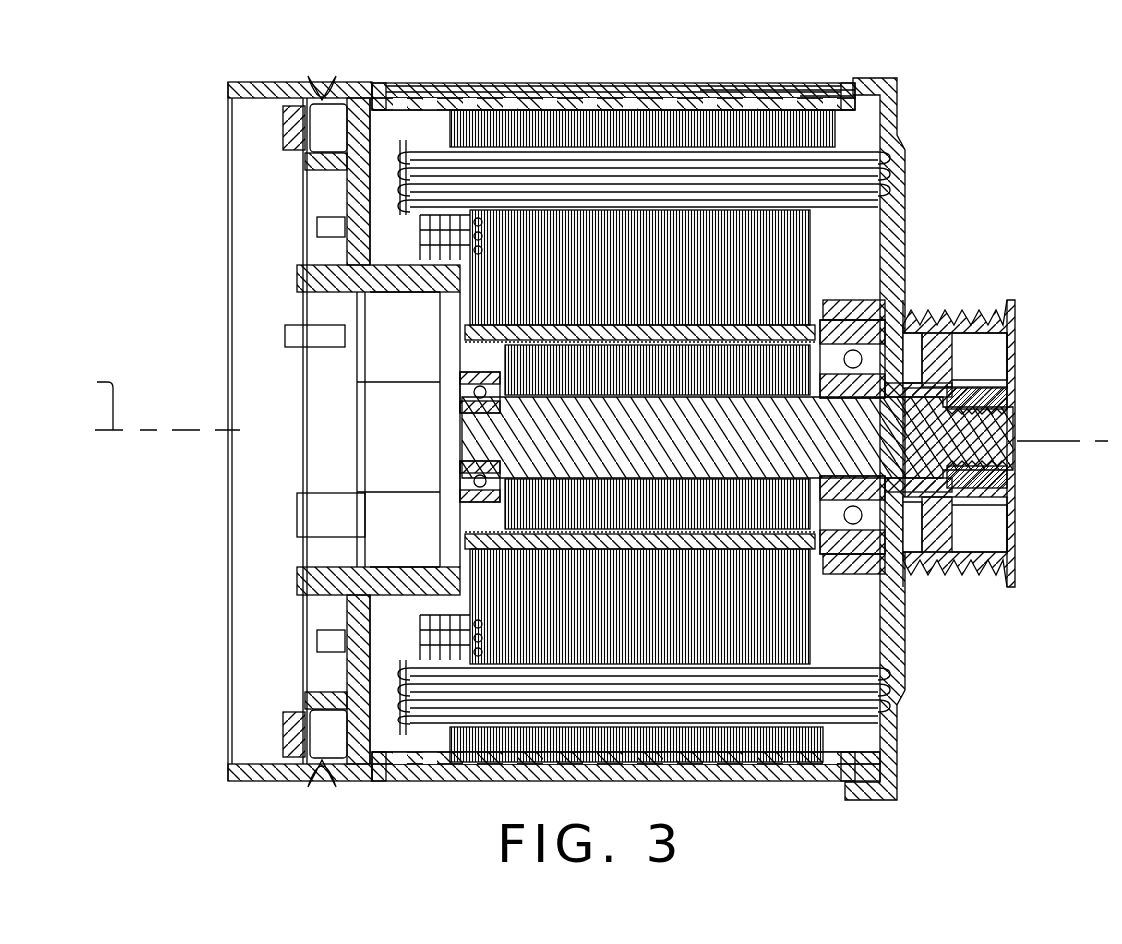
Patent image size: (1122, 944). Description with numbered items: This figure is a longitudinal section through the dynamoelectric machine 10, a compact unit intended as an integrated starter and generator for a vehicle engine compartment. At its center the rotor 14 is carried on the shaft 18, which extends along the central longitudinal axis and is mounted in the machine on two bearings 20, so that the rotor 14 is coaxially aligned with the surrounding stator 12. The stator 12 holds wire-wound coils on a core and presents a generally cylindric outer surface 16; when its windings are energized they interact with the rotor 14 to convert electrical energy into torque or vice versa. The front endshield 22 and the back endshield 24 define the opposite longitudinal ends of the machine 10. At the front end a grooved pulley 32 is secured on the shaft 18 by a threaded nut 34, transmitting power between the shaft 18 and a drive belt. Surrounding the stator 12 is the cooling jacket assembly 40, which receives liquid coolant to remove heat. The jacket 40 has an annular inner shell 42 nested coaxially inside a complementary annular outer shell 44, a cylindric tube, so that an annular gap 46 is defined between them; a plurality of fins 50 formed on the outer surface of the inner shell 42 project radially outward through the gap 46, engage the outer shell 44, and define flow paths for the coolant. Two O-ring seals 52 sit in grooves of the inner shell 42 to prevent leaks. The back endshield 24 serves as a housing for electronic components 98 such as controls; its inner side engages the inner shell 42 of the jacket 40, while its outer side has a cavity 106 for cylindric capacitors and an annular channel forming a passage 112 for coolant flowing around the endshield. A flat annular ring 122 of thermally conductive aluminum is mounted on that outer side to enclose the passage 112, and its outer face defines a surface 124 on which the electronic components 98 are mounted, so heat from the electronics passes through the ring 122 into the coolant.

The dynamoelectric machine 10 is at (950, 88).
The stator 12 is at (680, 92).
The rotor 14 is at (608, 198).
The cylindric outer surface 16 is at (553, 84).
The shaft 18 is at (1017, 430).
The bearings 20 is at (470, 443).
The front endshield 22 is at (895, 690).
The back endshield 24 is at (268, 81).
The grooved pulley 32 is at (1015, 305).
The threaded nut 34 is at (1003, 386).
The cooling jacket assembly 40 is at (527, 72).
The inner shell 42 is at (483, 85).
The outer shell 44 is at (436, 83).
The annular gap 46 is at (755, 92).
The fins 50 is at (815, 88).
The O-ring seals 52 is at (390, 85).
The electronic components 98 is at (283, 110).
The cavity 106 is at (350, 322).
The passage 112 is at (323, 100).
The ring 122 is at (305, 668).
The surface 124 is at (283, 150).